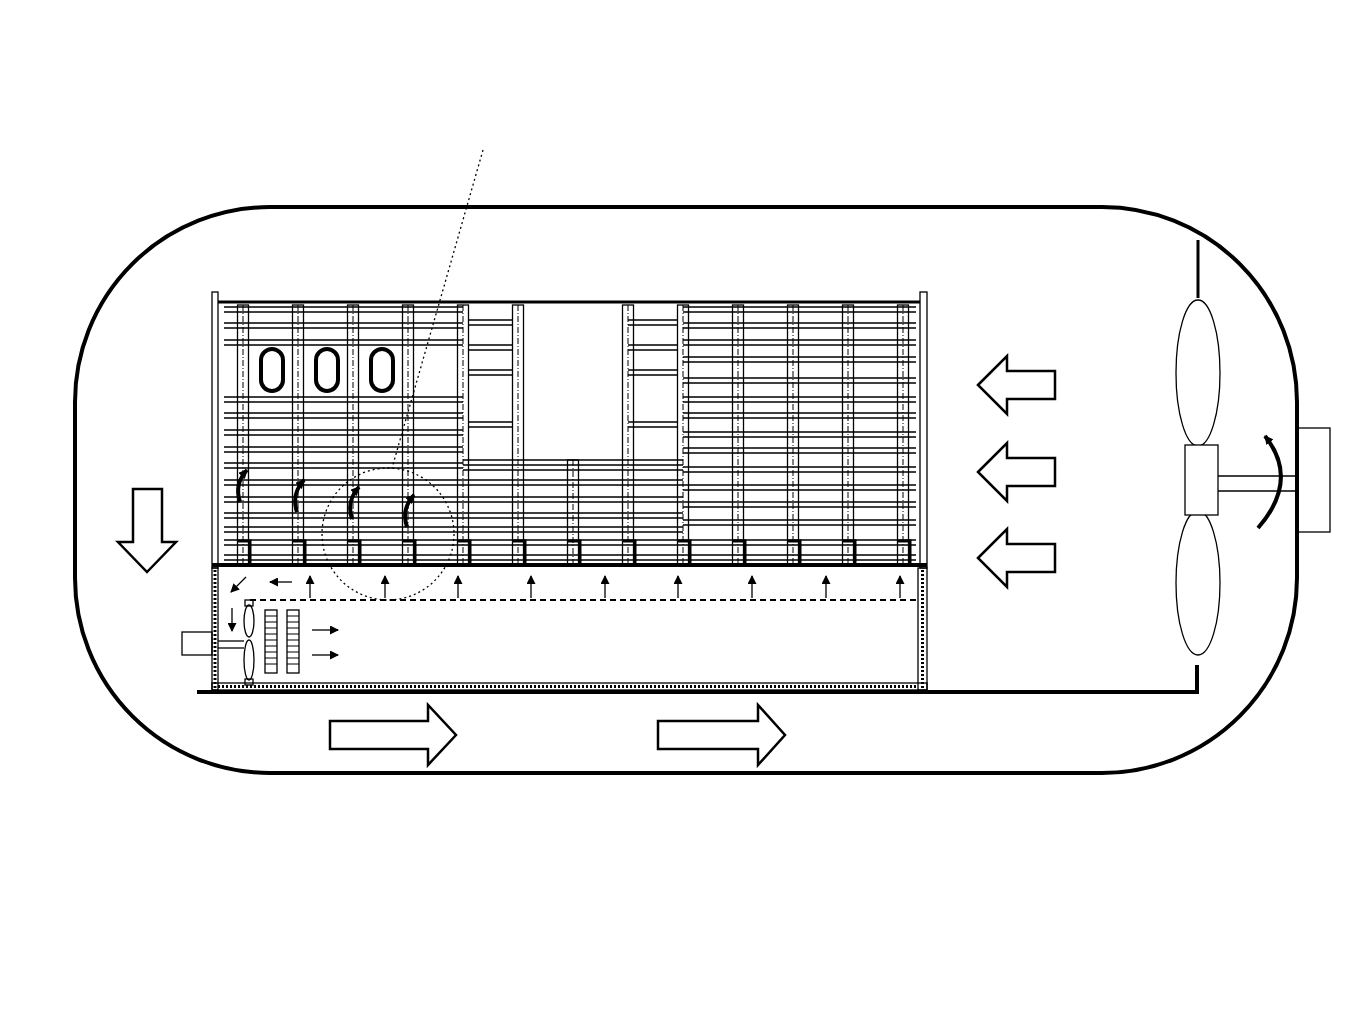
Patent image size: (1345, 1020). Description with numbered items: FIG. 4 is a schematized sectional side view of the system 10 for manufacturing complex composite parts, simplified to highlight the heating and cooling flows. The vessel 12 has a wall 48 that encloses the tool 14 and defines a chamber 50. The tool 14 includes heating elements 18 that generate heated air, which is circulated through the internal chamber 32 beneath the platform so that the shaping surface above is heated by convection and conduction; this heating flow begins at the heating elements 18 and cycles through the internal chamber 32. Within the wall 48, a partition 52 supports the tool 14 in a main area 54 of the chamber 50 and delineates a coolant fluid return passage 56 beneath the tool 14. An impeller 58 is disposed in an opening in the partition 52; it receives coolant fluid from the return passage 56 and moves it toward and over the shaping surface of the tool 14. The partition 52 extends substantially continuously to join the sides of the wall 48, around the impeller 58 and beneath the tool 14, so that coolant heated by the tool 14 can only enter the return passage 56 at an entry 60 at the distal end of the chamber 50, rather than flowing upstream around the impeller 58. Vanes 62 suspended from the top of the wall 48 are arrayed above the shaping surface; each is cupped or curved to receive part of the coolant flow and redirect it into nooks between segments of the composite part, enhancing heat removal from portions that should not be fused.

The system 10 is at (262, 138).
The vessel 12 is at (1142, 205).
The tool 14 is at (930, 648).
The heating elements 18 is at (263, 680).
The internal chamber 32 is at (566, 657).
The wall 48 is at (147, 250).
The chamber 50 is at (166, 373).
The partition 52 is at (1157, 694).
The main area 54 is at (1126, 300).
The coolant fluid return passage 56 is at (566, 735).
The impeller 58 is at (1208, 352).
The entry 60 is at (210, 738).
The vanes 62 is at (236, 485).